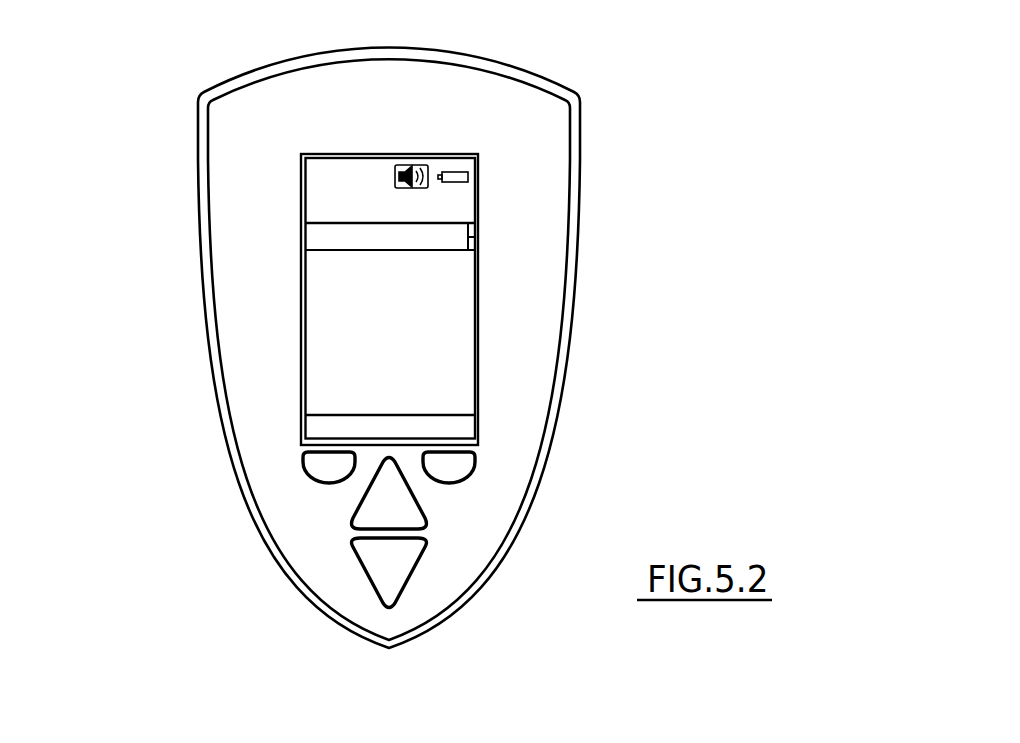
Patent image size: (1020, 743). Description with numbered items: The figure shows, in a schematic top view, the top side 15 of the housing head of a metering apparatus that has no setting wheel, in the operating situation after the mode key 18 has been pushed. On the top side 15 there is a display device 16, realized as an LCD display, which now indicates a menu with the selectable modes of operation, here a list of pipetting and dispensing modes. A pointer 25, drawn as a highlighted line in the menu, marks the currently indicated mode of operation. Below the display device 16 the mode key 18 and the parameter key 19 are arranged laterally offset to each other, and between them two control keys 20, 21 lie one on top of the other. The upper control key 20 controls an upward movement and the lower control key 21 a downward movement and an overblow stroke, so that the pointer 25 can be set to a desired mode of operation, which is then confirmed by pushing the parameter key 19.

The top side 15 is at (248, 185).
The display device 16 is at (307, 305).
The mode key 18 is at (303, 465).
The parameter key 19 is at (473, 465).
The upper control key 20 is at (358, 509).
The lower control key 21 is at (370, 562).
The pointer 25 is at (478, 236).